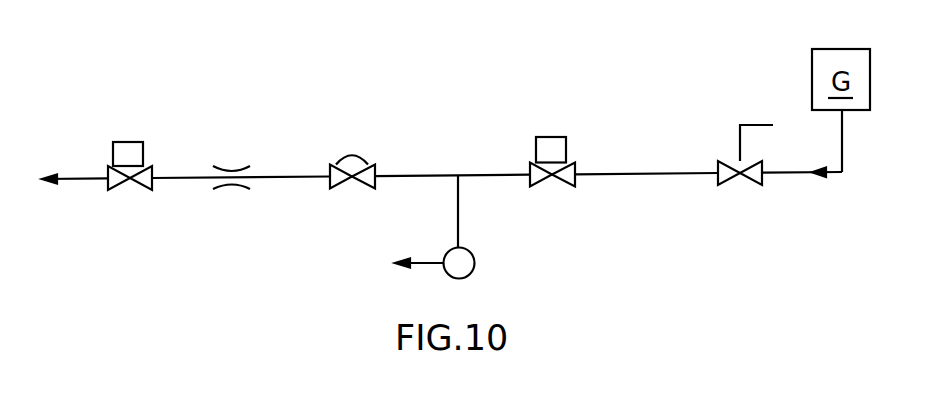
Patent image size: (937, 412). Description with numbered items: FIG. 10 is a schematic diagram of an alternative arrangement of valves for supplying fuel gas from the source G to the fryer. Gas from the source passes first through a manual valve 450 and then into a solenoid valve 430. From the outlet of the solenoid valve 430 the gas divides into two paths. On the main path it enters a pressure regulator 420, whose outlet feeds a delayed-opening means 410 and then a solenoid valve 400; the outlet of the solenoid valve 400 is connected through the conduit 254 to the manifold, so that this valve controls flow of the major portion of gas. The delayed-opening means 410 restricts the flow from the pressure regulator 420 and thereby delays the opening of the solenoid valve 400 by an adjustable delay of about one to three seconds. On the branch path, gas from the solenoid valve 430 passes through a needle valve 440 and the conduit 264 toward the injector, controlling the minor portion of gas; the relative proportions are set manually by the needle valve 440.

The conduit 254 is at (73, 177).
The conduit 264 is at (423, 260).
The solenoid valve 400 is at (137, 141).
The delayed-opening means 410 is at (238, 171).
The pressure regulator 420 is at (358, 155).
The solenoid valve 430 is at (563, 136).
The needle valve 440 is at (472, 253).
The manual valve 450 is at (720, 158).